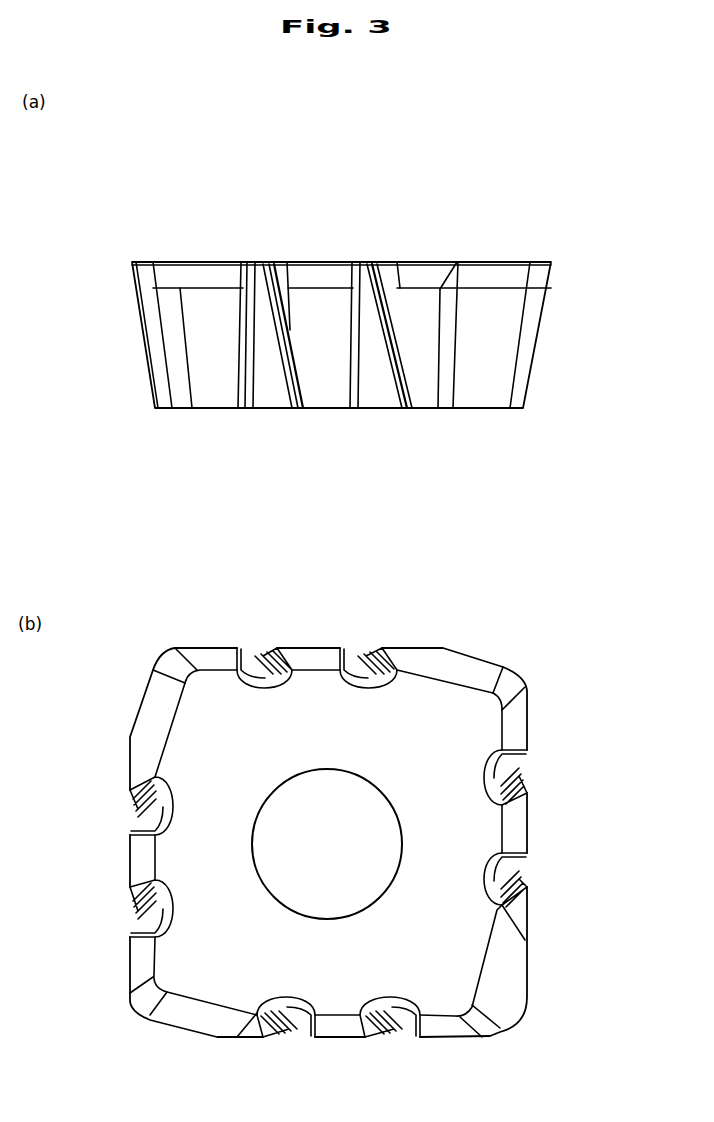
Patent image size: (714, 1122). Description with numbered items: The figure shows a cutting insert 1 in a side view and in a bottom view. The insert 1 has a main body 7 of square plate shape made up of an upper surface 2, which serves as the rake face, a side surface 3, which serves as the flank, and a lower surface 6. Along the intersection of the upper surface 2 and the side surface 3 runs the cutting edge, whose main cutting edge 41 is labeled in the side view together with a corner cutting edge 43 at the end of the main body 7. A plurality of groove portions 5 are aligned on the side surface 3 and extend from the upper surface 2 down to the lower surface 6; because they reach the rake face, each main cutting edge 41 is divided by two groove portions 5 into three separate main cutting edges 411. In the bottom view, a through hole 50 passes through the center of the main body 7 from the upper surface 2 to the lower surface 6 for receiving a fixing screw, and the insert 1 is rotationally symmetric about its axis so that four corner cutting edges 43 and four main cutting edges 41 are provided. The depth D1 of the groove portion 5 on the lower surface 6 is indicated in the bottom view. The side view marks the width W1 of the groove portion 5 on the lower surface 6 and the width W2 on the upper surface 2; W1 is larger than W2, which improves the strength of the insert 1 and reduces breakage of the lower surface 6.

The insert 1 is at (513, 170).
The upper surface 2 is at (502, 262).
The side surface 3 is at (490, 334).
The groove portion 5 is at (271, 410).
The lower surface 6 is at (480, 410).
The main body 7 is at (603, 212).
The main cutting edge 41 is at (455, 156).
The separate main cutting edge 411 is at (203, 262).
The corner cutting edge 43 is at (146, 262).
The through hole 50 is at (327, 822).
The width of the groove portion on the lower surface W1 is at (354, 430).
The width of the groove portion on the rake face W2 is at (385, 257).
The depth of the groove portion on the lower surface D1 is at (450, 817).